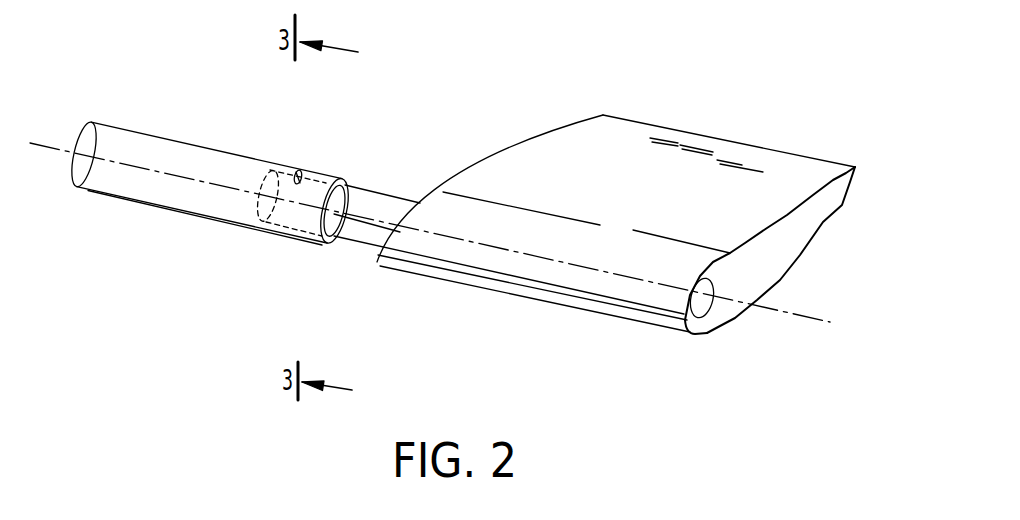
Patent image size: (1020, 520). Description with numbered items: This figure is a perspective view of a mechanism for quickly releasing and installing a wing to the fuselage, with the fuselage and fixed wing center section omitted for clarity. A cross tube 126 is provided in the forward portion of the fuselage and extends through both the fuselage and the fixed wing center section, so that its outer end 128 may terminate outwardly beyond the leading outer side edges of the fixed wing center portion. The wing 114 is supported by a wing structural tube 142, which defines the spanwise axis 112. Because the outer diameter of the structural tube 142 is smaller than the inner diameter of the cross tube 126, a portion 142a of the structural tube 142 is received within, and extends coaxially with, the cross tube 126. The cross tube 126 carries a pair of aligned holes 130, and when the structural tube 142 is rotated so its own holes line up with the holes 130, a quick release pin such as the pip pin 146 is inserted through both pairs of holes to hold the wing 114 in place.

The spanwise axis 112 is at (797, 316).
The wing 114 is at (727, 140).
The cross tube 126 is at (118, 197).
The outer end 128 is at (307, 218).
The aligned holes 130 is at (272, 212).
The wing structural tube 142 is at (368, 226).
The portion of structural tube 142a is at (273, 167).
The pip pin 146 is at (304, 170).